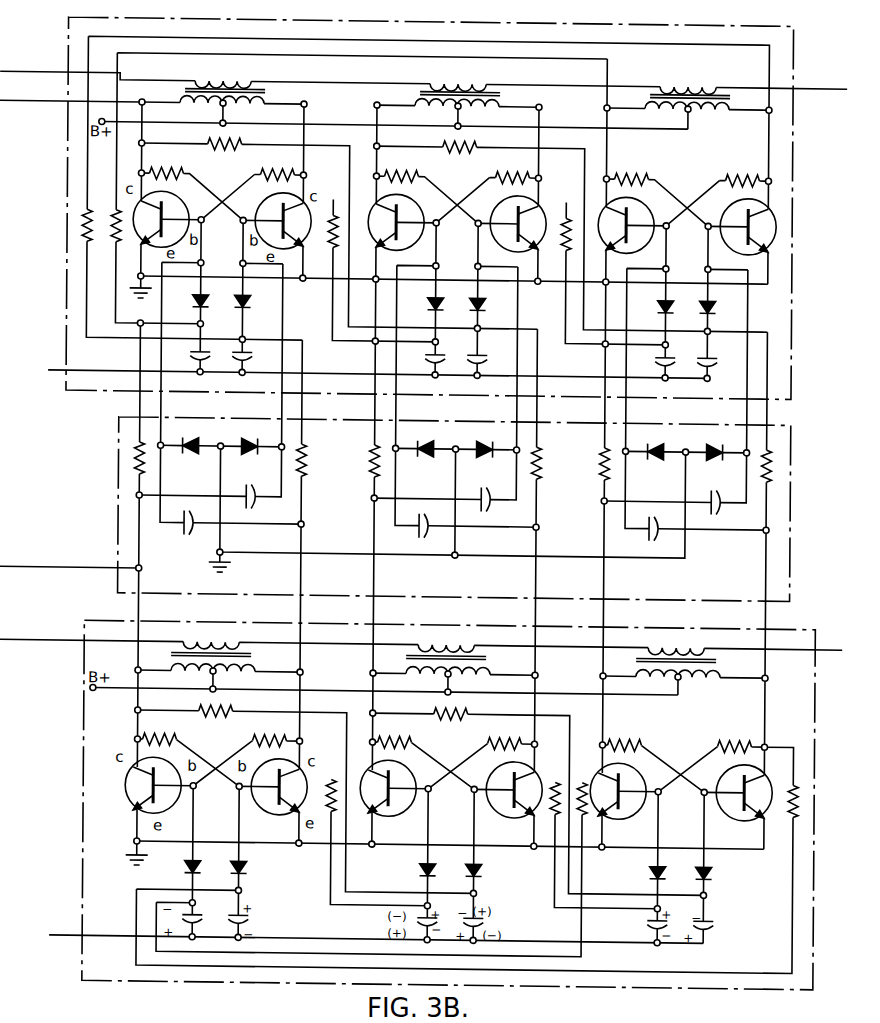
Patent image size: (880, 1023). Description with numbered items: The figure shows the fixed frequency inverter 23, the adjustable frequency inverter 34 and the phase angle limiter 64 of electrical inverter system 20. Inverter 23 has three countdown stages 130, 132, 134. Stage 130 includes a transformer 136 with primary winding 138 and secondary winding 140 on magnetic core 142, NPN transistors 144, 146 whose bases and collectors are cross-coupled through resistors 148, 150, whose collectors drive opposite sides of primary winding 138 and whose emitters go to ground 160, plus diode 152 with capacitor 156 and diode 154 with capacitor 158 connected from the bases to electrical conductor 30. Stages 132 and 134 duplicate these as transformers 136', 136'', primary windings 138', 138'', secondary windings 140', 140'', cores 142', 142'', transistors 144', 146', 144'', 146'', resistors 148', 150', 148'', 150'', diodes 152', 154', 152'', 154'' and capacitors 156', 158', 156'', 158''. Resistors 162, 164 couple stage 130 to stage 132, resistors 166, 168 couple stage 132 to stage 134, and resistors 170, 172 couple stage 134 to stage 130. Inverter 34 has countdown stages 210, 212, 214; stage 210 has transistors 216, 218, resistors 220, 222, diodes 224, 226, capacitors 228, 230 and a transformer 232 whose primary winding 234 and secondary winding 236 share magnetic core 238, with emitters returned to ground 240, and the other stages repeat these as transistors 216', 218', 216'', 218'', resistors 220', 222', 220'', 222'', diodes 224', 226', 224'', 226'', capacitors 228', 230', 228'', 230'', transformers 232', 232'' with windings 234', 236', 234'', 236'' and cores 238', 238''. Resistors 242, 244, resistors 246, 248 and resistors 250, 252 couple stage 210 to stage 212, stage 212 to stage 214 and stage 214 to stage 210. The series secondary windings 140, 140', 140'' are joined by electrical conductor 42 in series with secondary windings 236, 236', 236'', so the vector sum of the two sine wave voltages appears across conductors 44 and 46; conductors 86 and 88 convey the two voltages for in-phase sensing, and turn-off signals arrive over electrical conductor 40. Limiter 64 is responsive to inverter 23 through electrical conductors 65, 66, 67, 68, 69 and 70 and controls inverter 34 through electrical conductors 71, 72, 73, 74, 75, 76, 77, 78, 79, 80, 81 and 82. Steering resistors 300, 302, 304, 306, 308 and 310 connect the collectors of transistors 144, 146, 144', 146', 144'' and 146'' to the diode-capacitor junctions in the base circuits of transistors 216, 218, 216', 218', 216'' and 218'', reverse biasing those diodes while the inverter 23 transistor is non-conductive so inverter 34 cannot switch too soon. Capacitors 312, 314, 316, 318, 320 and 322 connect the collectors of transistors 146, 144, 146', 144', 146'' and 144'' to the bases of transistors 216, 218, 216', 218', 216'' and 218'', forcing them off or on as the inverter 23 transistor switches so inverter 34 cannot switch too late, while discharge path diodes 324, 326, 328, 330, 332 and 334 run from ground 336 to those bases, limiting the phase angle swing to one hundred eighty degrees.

The electrical inverter system 20 is at (104, 1012).
The electrical inverter 23 is at (262, 983).
The electrical conductor 30 is at (58, 937).
The electrical inverter 34 is at (794, 266).
The electrical conductor 40 is at (57, 371).
The electrical conductor 42 is at (56, 535).
The electrical conductor 44 is at (837, 84).
The electrical conductor 46 is at (809, 650).
The phase angle limiter circuit 64 is at (793, 527).
The electrical conductor 65 is at (142, 608).
The electrical conductor 66 is at (304, 609).
The electrical conductor 67 is at (377, 610).
The electrical conductor 68 is at (539, 610).
The electrical conductor 69 is at (607, 610).
The electrical conductor 70 is at (769, 611).
The electrical conductor 71 is at (141, 409).
The electrical conductor 72 is at (164, 409).
The electrical conductor 73 is at (284, 410).
The electrical conductor 74 is at (305, 409).
The electrical conductor 75 is at (377, 410).
The electrical conductor 76 is at (399, 409).
The electrical conductor 77 is at (519, 410).
The electrical conductor 78 is at (540, 409).
The electrical conductor 79 is at (607, 410).
The electrical conductor 80 is at (629, 409).
The electrical conductor 81 is at (749, 410).
The electrical conductor 82 is at (770, 409).
The electrical conductor 86 is at (97, 84).
The electrical conductor 88 is at (69, 554).
The countdown stage 130 is at (232, 737).
The countdown stage 132 is at (467, 741).
The countdown stage 134 is at (695, 738).
The transformer 136 is at (197, 656).
The transformer 136' is at (431, 659).
The transformer 136'' is at (662, 662).
The primary winding 138 is at (227, 678).
The primary winding 138' is at (456, 680).
The primary winding 138'' is at (689, 685).
The secondary winding 140 is at (204, 637).
The secondary winding 140' is at (434, 638).
The secondary winding 140'' is at (697, 643).
The magnetic core 142 is at (231, 657).
The magnetic core 142' is at (466, 657).
The magnetic core 142'' is at (698, 660).
The first transistor 144 is at (138, 784).
The first transistor 144' is at (394, 801).
The first transistor 144'' is at (624, 802).
The second transistor 146 is at (273, 801).
The second transistor 146' is at (508, 802).
The second transistor 146'' is at (738, 803).
The first resistor 148 is at (165, 730).
The first resistor 148' is at (393, 733).
The first resistor 148'' is at (624, 735).
The second resistor 150 is at (263, 731).
The second resistor 150' is at (500, 734).
The second resistor 150'' is at (723, 736).
The first diode 152 is at (173, 862).
The first diode 152' is at (398, 864).
The first diode 152'' is at (630, 866).
The second diode 154 is at (260, 863).
The second diode 154' is at (493, 865).
The second diode 154'' is at (730, 878).
The first capacitor 156 is at (205, 910).
The first capacitor 156' is at (443, 913).
The first capacitor 156'' is at (630, 924).
The second capacitor 158 is at (257, 910).
The second capacitor 158' is at (501, 923).
The second capacitor 158'' is at (730, 923).
The ground 160 is at (142, 858).
The resistor 162 is at (336, 777).
The resistor 164 is at (230, 705).
The resistor 166 is at (560, 777).
The resistor 168 is at (461, 704).
The resistor 170 is at (587, 777).
The resistor 172 is at (793, 812).
The countdown stage 210 is at (235, 174).
The countdown stage 212 is at (471, 173).
The countdown stage 214 is at (700, 175).
The transistor 216 is at (169, 214).
The transistor 216' is at (409, 216).
The transistor 216'' is at (640, 220).
The transistor 218 is at (276, 215).
The transistor 218' is at (505, 217).
The transistor 218'' is at (738, 221).
The resistor 220 is at (171, 166).
The resistor 220' is at (403, 167).
The resistor 220'' is at (635, 170).
The resistor 222 is at (271, 166).
The resistor 222' is at (505, 169).
The resistor 222'' is at (734, 171).
The diode 224 is at (187, 293).
The diode 224' is at (421, 296).
The diode 224'' is at (651, 299).
The diode 226 is at (257, 294).
The diode 226' is at (461, 297).
The diode 226'' is at (692, 300).
The capacitor 228 is at (212, 340).
The capacitor 228' is at (448, 350).
The capacitor 228'' is at (679, 353).
The capacitor 230 is at (253, 340).
The capacitor 230' is at (489, 350).
The capacitor 230'' is at (722, 353).
The transformer 232 is at (196, 92).
The transformer 232' is at (431, 95).
The transformer 232'' is at (671, 98).
The primary winding 234 is at (232, 111).
The primary winding 234' is at (467, 114).
The primary winding 234'' is at (700, 119).
The secondary winding 236 is at (241, 74).
The secondary winding 236' is at (475, 76).
The secondary winding 236'' is at (706, 79).
The magnetic core 238 is at (242, 92).
The magnetic core 238' is at (485, 96).
The magnetic core 238'' is at (709, 98).
The ground 240 is at (148, 298).
The resistor 242 is at (334, 197).
The resistor 244 is at (227, 142).
The resistor 246 is at (567, 197).
The resistor 248 is at (470, 143).
The resistor 250 is at (86, 250).
The resistor 252 is at (120, 198).
The steering resistor 300 is at (135, 466).
The steering resistor 302 is at (304, 447).
The steering resistor 304 is at (371, 458).
The steering resistor 306 is at (548, 463).
The steering resistor 308 is at (598, 468).
The steering resistor 310 is at (776, 468).
The capacitor 312 is at (190, 538).
The capacitor 314 is at (258, 471).
The capacitor 316 is at (418, 535).
The capacitor 318 is at (493, 471).
The capacitor 320 is at (652, 533).
The capacitor 322 is at (724, 471).
The diode 324 is at (202, 452).
The diode 326 is at (245, 443).
The diode 328 is at (436, 455).
The diode 330 is at (477, 443).
The diode 332 is at (668, 455).
The diode 334 is at (709, 443).
The ground 336 is at (212, 574).